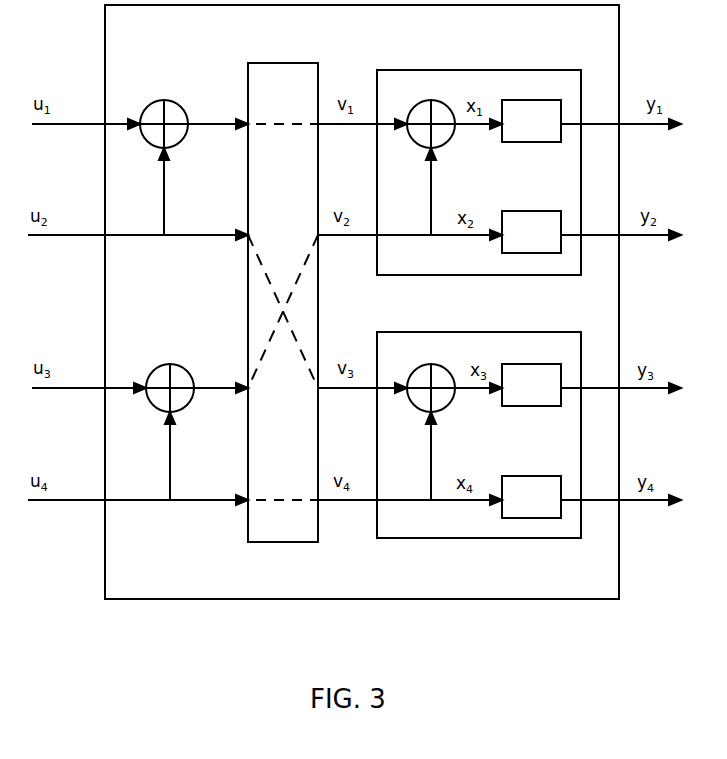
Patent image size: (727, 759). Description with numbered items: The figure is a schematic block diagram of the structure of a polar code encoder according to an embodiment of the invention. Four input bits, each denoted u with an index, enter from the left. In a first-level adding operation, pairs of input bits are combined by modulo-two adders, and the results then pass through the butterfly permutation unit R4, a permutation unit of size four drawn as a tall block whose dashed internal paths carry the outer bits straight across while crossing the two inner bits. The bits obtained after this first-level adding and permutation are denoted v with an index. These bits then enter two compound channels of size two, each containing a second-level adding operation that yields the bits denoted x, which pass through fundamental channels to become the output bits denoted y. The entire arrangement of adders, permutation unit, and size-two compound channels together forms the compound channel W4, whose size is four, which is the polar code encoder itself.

The compound channel whose size is 4 W4 is at (362, 322).
The butterfly permutation unit R4 is at (283, 321).